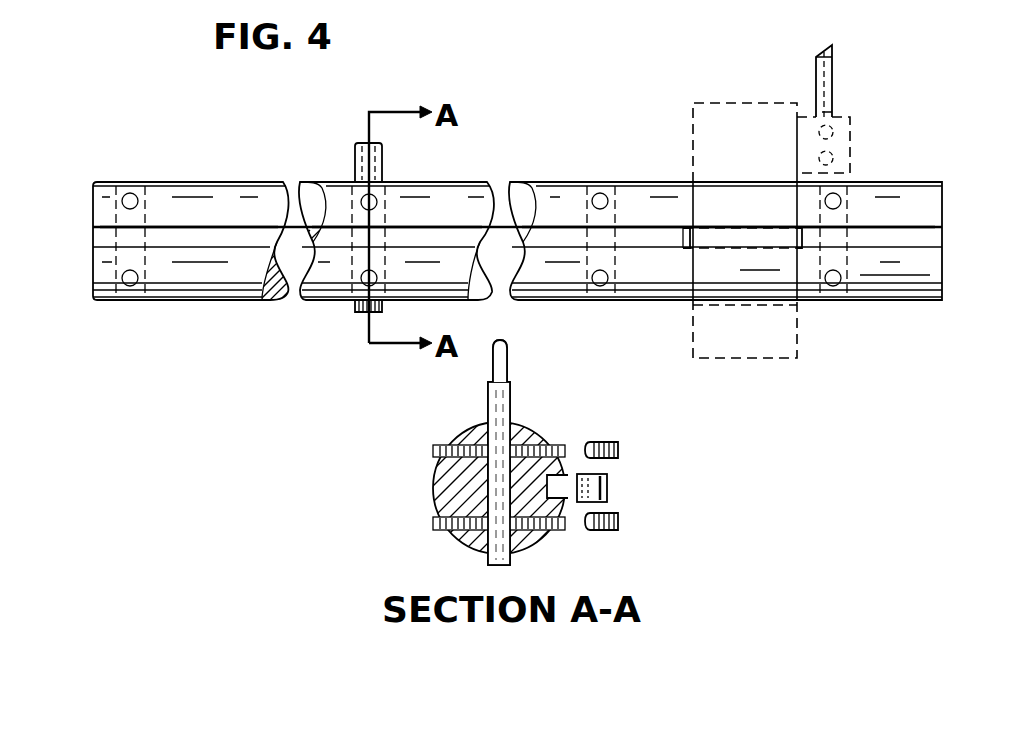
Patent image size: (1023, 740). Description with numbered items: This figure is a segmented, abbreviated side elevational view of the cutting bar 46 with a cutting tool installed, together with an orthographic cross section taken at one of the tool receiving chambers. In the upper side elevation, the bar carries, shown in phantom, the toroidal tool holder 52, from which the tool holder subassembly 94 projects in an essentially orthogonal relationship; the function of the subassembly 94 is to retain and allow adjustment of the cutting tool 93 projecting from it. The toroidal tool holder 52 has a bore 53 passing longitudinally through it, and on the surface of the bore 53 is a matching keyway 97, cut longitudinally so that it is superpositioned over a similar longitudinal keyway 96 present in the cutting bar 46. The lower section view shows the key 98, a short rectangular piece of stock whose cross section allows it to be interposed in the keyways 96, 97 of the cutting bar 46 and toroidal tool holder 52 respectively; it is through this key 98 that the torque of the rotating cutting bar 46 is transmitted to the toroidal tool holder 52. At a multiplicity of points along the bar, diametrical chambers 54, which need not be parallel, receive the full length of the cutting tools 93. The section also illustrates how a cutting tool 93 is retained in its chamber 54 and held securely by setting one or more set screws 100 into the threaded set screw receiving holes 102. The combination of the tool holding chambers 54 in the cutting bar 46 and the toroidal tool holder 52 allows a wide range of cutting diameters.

The cutting bar 46 is at (937, 164).
The toroidal tool holder 52 is at (752, 103).
The bore 53 is at (760, 310).
The tool receiving chamber 54 is at (178, 163).
The cutting tool 93 is at (354, 162).
The tool holder subassembly 94 is at (850, 137).
The longitudinal keyway 96 is at (226, 232).
The matching keyway 97 is at (748, 252).
The key 98 is at (683, 236).
The set screw 100 is at (618, 450).
The threaded set screw receiving hole 102 is at (440, 446).